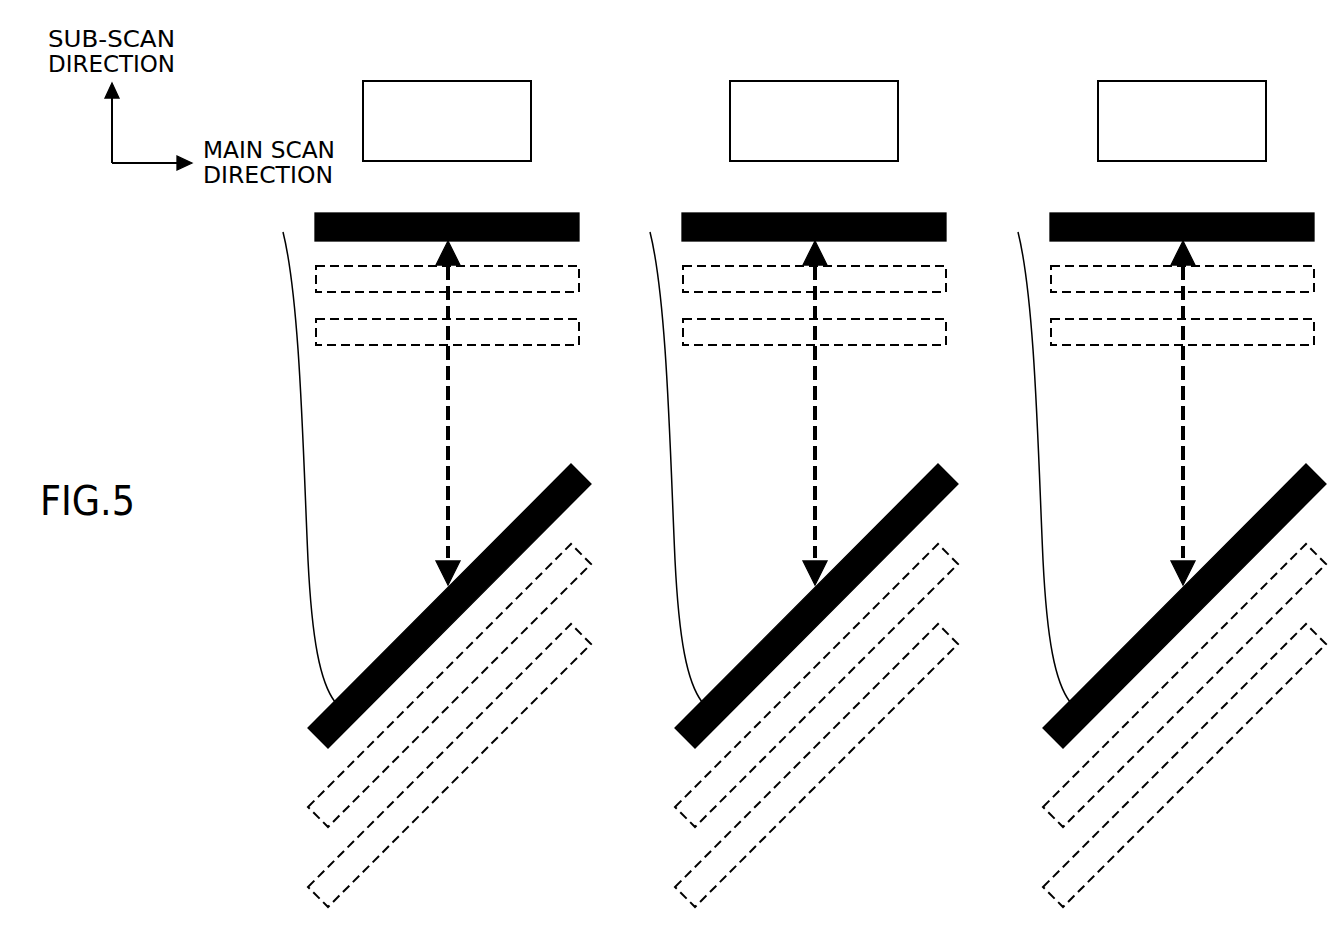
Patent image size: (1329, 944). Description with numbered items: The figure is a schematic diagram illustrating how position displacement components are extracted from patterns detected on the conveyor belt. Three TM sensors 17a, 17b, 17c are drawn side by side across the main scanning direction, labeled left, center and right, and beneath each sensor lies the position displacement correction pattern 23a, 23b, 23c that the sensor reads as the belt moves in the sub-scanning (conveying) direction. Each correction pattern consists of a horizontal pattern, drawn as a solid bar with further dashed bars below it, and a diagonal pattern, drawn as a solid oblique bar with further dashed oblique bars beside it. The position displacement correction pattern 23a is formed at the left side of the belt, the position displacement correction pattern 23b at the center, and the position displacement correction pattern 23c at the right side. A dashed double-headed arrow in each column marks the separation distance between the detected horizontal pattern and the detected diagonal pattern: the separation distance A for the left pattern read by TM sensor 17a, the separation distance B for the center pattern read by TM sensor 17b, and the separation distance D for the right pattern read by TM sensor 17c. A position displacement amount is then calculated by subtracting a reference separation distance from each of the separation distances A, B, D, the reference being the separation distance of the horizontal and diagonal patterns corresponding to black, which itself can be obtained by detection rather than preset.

The TM sensor 17a is at (446, 81).
The TM sensor 17b is at (814, 94).
The TM sensor 17c is at (1182, 94).
The position displacement correction pattern 23a is at (315, 226).
The position displacement correction pattern 23b is at (783, 480).
The position displacement correction pattern 23c is at (1151, 480).
The separation distance A is at (451, 418).
The separation distance B is at (833, 413).
The separation distance D is at (1202, 413).